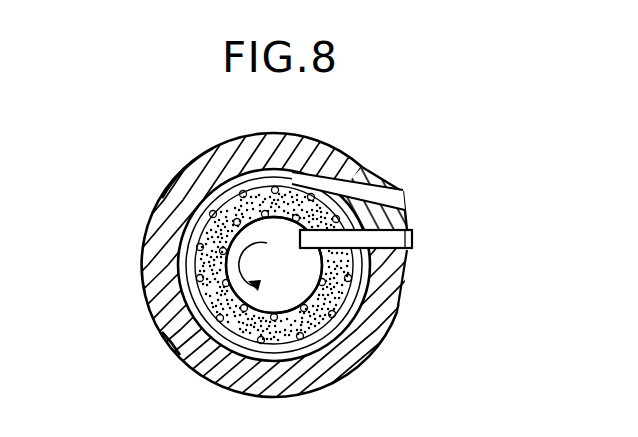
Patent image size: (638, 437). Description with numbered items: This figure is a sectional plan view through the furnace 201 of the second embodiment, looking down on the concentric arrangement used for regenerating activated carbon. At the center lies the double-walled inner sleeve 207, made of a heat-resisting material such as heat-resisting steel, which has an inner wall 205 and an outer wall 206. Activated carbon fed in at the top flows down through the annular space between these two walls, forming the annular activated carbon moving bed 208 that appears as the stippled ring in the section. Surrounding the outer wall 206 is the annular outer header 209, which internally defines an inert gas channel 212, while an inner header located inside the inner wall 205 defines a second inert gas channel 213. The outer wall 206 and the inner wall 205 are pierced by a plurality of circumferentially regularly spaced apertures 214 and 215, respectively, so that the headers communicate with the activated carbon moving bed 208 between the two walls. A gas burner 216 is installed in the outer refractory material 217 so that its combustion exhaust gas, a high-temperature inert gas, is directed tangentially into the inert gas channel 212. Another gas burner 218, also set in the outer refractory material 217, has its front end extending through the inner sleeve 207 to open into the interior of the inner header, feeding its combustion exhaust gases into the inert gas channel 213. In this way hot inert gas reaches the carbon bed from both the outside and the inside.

The furnace 201 is at (352, 156).
The inner wall 205 is at (287, 312).
The outer wall 206 is at (207, 303).
The inner sleeve 207 is at (178, 253).
The annular activated carbon moving bed 208 is at (333, 315).
The annular outer header 209 is at (193, 215).
The inert gas channel 212 is at (328, 342).
The inert gas channel 213 is at (235, 277).
The apertures 214 is at (220, 188).
The apertures 215 is at (197, 374).
The gas burner 216 is at (388, 192).
The outer refractory material 217 is at (392, 293).
The gas burner 218 is at (413, 234).